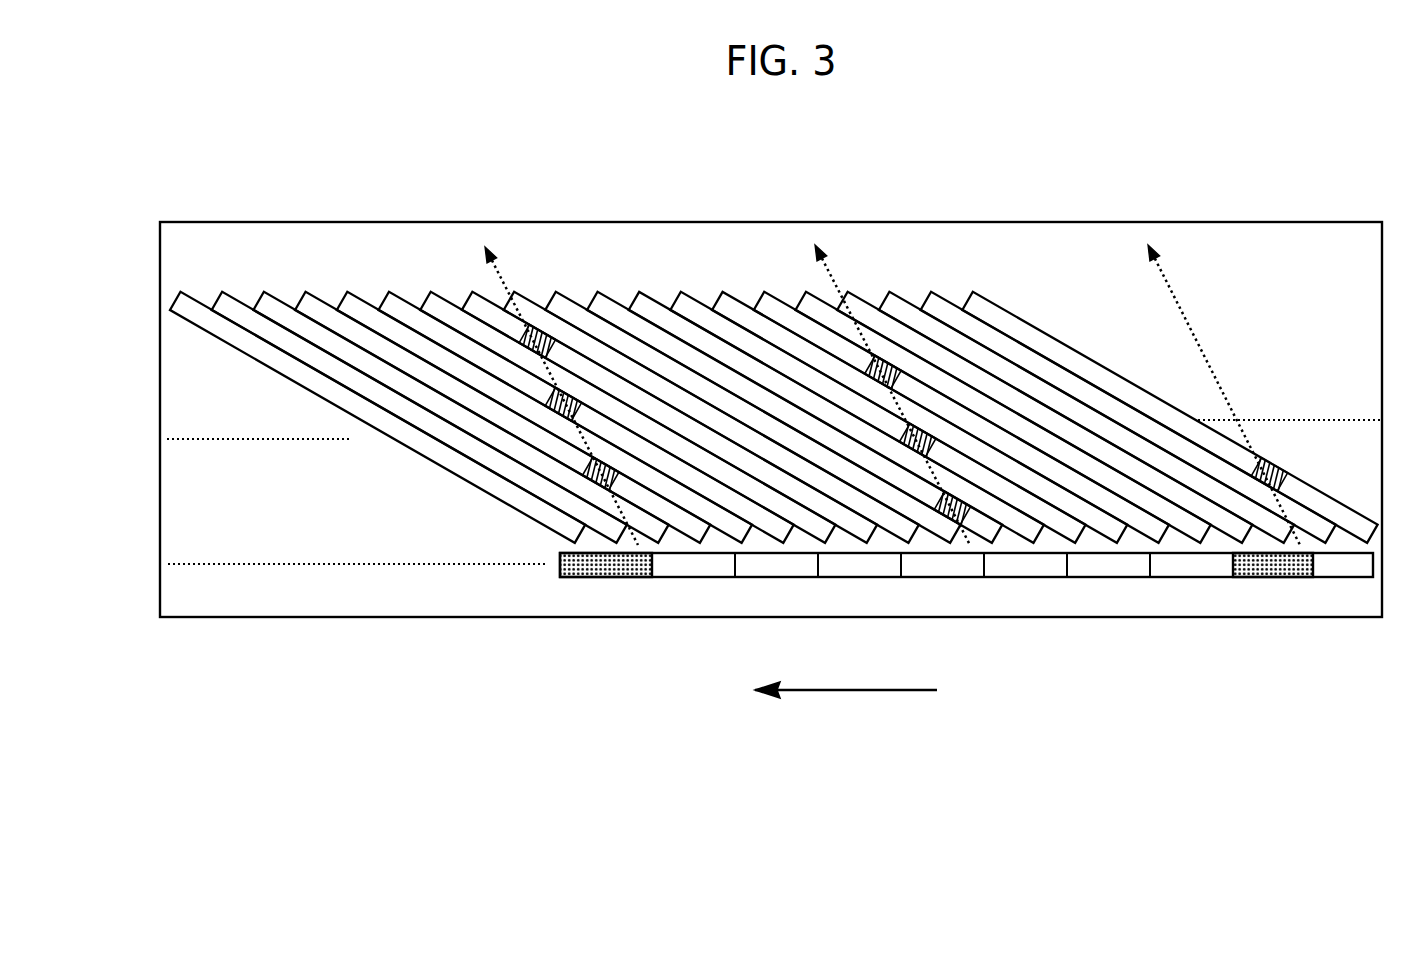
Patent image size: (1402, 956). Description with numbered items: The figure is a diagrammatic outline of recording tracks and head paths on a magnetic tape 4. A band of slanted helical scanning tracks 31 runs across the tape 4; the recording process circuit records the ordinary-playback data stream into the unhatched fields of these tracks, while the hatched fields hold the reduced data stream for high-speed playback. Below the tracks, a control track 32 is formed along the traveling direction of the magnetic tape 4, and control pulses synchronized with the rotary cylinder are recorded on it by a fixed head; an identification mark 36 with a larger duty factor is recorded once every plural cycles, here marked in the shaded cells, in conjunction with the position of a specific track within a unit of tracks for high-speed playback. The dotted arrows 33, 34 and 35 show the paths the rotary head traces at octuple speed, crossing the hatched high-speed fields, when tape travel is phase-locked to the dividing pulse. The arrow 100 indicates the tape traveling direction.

The magnetic tape 4 is at (326, 221).
The helical track recording area 31 is at (167, 440).
The control track 32 is at (168, 564).
The head scanning trajectory (first head position) 33 is at (503, 277).
The head scanning trajectory (second head position) 34 is at (835, 278).
The head scanning trajectory (third head position) 35 is at (1168, 280).
The control signal (mark) recorded in control track 36 is at (597, 578).
The tape running direction 100 is at (855, 692).